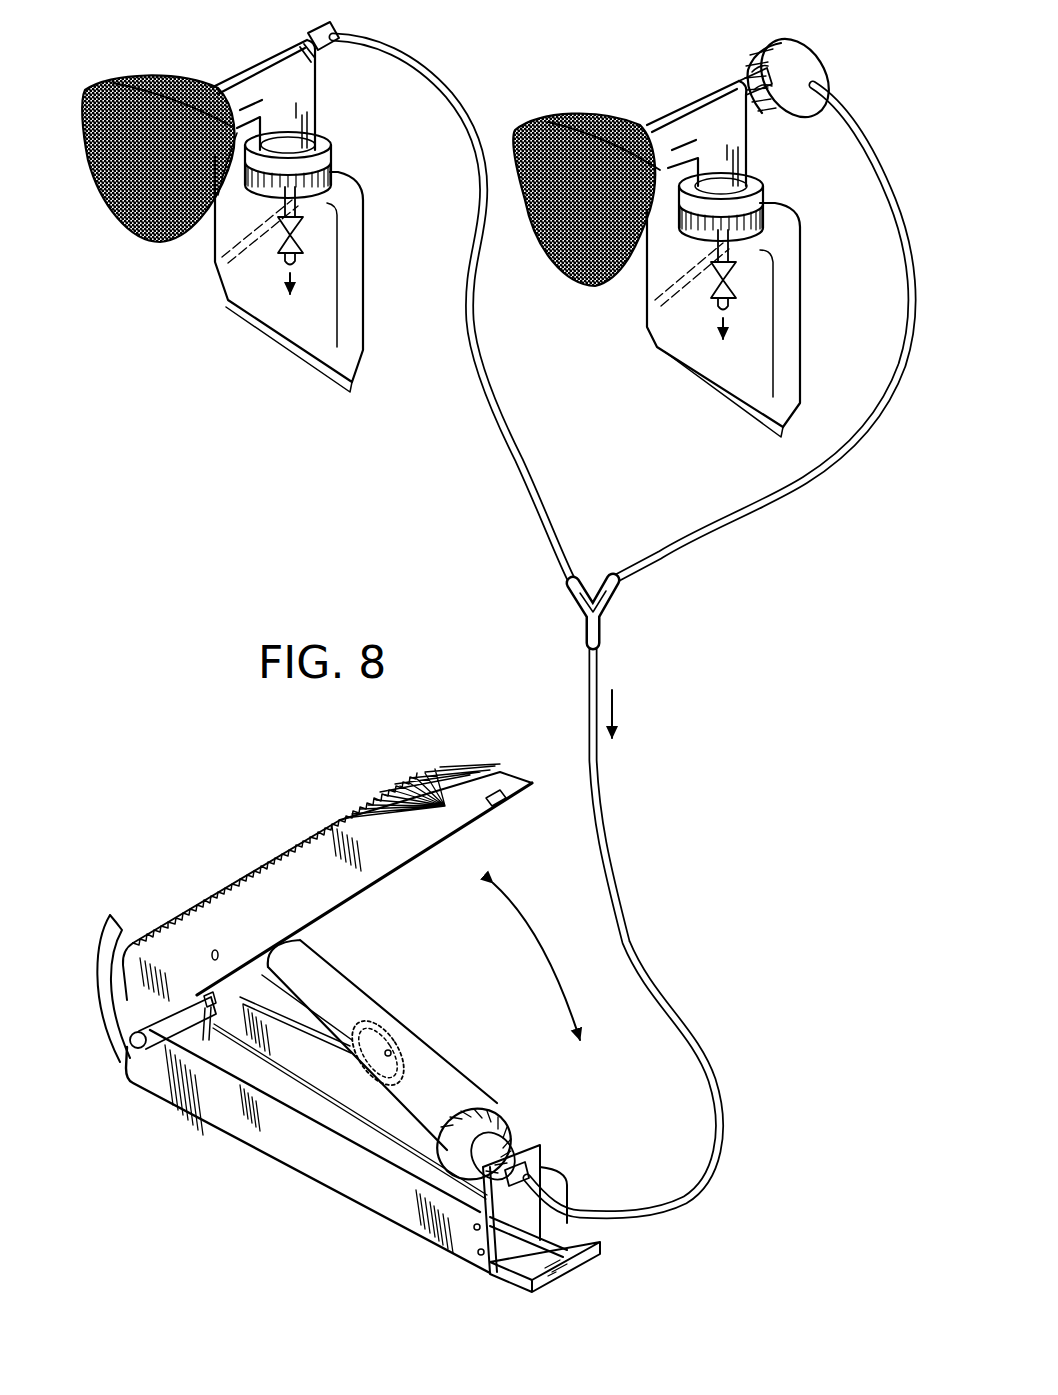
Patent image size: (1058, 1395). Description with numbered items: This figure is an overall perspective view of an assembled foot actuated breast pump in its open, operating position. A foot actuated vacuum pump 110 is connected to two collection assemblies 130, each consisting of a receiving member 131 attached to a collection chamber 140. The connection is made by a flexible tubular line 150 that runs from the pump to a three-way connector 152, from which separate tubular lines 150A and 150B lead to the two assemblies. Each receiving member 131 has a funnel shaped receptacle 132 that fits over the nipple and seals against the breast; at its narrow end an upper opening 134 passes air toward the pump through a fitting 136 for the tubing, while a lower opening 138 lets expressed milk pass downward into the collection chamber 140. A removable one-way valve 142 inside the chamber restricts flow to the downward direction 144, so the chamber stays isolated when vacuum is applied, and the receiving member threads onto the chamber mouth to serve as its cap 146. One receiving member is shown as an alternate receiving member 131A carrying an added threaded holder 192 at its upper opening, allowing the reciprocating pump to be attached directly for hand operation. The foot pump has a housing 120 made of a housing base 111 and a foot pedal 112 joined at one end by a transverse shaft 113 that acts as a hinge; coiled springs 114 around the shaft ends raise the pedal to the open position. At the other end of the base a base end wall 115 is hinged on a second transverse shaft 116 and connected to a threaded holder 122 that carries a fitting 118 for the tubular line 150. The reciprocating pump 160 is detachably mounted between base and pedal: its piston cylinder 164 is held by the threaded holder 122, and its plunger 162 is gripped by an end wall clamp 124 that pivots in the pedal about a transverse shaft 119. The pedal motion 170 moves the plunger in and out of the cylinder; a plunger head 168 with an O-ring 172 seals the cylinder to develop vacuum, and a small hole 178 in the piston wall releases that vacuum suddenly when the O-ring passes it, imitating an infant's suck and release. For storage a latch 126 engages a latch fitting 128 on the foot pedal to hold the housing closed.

The foot actuated vacuum pump 110 is at (374, 1026).
The housing base 111 is at (425, 1235).
The foot pedal 112 is at (305, 865).
The transverse shaft 113 is at (195, 1018).
The coiled springs 114 is at (200, 1018).
The base end wall 115 is at (530, 1150).
The second transverse shaft 116 is at (475, 1258).
The fitting 118 is at (532, 1176).
The transverse shaft 119 is at (214, 948).
The housing 120 is at (105, 945).
The threaded holder 122 is at (500, 1122).
The end wall clamp 124 is at (268, 936).
The latch 126 is at (577, 1264).
The latch fitting 128 is at (503, 810).
The collection assembly 130 is at (465, 221).
The receiving member 131 is at (165, 82).
The alternate receiving member 131A is at (598, 128).
The funnel shaped receptacle 132 is at (128, 232).
The upper opening 134 is at (312, 66).
The fitting 136 is at (336, 44).
The lower opening 138 is at (315, 112).
The collection chamber 140 is at (273, 330).
The one-way valve 142 is at (298, 226).
The downward direction 144 is at (298, 283).
The cap 146 is at (333, 158).
The tubular line 150 is at (612, 858).
The tubular line 150A is at (722, 505).
The tubular line 150B is at (525, 497).
The three-way connector 152 is at (610, 606).
The reciprocating pump 160 is at (428, 1067).
The plunger 162 is at (345, 982).
The piston cylinder 164 is at (475, 1095).
The plunger head 168 is at (418, 1053).
The pedal motion 170 is at (530, 932).
The O-ring 172 is at (400, 1020).
The hole 178 is at (392, 1052).
The threaded holder 192 is at (770, 45).